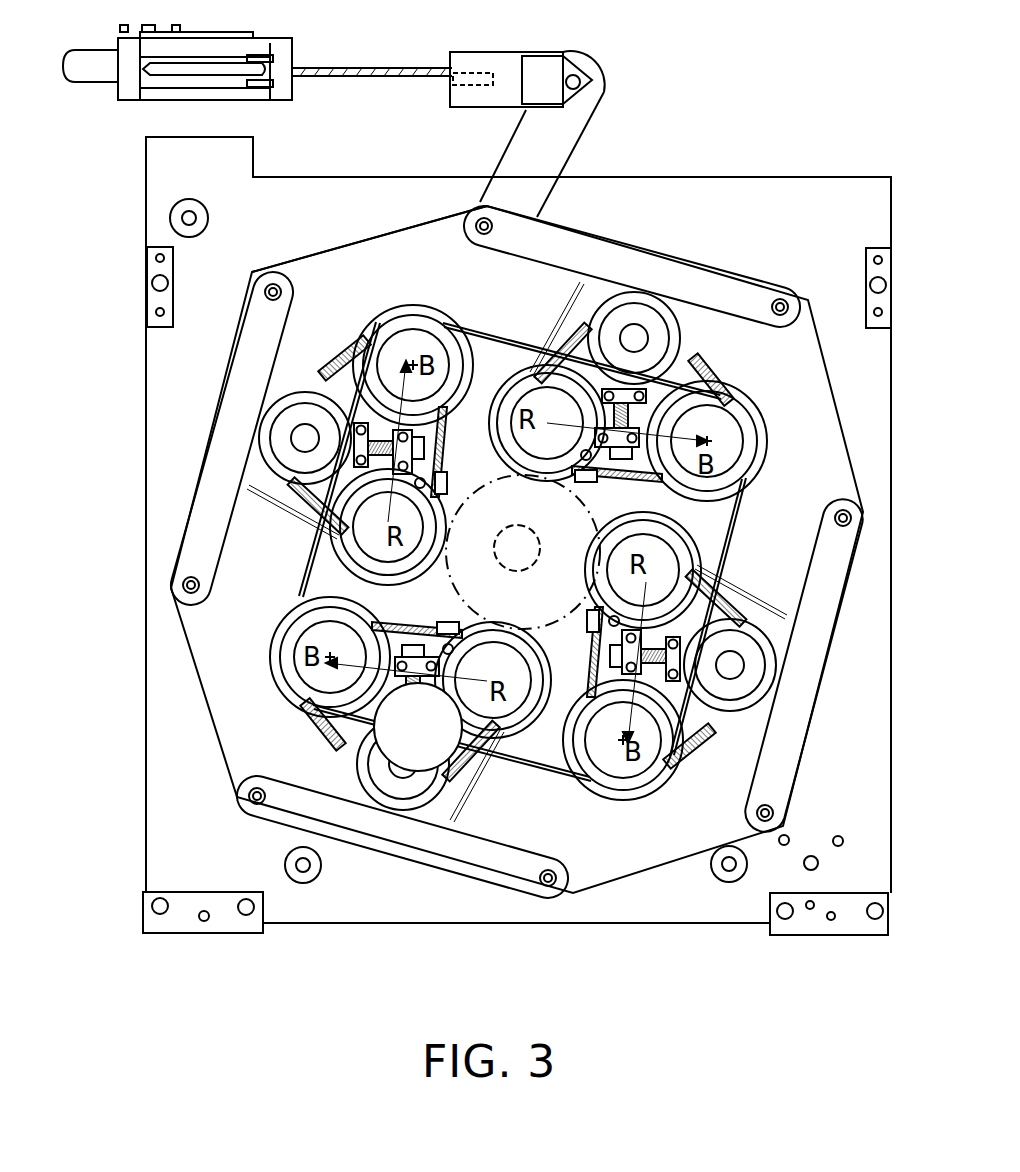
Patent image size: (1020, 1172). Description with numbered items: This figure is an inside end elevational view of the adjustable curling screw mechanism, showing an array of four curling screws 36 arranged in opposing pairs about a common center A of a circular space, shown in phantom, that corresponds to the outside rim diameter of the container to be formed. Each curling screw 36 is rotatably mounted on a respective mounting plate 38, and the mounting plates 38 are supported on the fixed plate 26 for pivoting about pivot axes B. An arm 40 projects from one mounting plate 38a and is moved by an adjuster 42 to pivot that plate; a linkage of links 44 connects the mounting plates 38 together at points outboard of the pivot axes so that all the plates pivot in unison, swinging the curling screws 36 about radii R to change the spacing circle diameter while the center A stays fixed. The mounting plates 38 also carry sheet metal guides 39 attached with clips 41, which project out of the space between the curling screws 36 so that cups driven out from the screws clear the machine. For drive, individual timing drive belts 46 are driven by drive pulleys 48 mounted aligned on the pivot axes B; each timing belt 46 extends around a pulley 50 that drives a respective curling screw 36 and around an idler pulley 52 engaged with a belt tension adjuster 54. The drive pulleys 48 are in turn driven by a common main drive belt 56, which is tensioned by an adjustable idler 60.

The fixed plate 26 is at (145, 362).
The curling screw 36 is at (513, 373).
The mounting plate 38 is at (812, 298).
The mounting plate 38a is at (304, 258).
The sheet metal guide 39 is at (583, 474).
The arm 40 is at (604, 92).
The clip 41 is at (714, 394).
The adjuster 42 is at (370, 62).
The link 44 is at (222, 408).
The timing drive belt 46 is at (372, 340).
The drive pulley 48 is at (420, 312).
The pulley 50 is at (660, 325).
The idler pulley 52 is at (690, 325).
The belt tension adjuster 54 is at (393, 340).
The common main drive belt 56 is at (507, 340).
The idler 60 is at (386, 752).